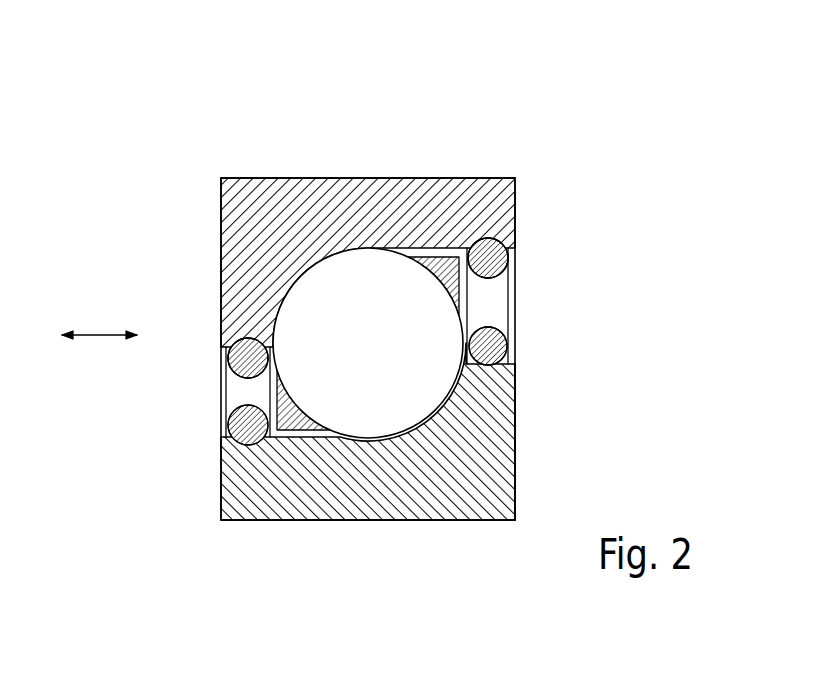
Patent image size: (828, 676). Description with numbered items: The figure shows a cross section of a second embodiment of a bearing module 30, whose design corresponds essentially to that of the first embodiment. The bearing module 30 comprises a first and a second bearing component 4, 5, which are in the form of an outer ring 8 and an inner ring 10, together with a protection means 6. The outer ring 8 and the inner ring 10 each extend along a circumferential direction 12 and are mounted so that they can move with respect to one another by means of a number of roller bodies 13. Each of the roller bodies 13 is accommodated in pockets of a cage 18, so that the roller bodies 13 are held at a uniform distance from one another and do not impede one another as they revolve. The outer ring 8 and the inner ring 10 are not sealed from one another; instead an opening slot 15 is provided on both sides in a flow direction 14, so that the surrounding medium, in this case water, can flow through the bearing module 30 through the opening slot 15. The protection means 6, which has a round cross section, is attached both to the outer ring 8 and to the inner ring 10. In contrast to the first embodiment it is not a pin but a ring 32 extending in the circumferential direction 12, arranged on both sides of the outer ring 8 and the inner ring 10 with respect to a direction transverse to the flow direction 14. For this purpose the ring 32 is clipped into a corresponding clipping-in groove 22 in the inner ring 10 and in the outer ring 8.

The first bearing component 4 is at (384, 167).
The second bearing component 5 is at (476, 531).
The protection means 6 is at (217, 383).
The outer ring 8 is at (256, 200).
The inner ring 10 is at (368, 490).
The circumferential direction 12 is at (424, 170).
The roller bodies 13 is at (386, 356).
The flow direction 14 is at (96, 333).
The opening slot 15 is at (216, 421).
The cage 18 is at (290, 420).
The clipping-in groove 22 is at (240, 340).
The bearing module 30 is at (537, 478).
The ring 32 is at (505, 245).